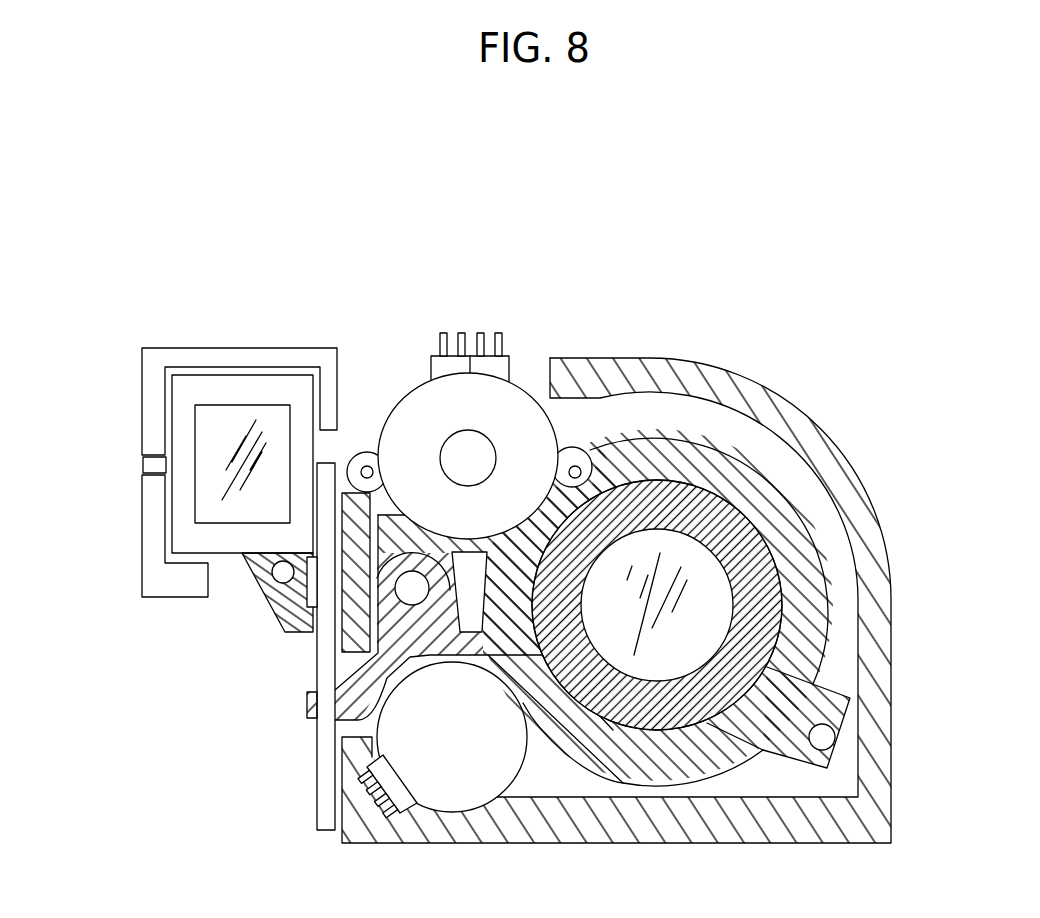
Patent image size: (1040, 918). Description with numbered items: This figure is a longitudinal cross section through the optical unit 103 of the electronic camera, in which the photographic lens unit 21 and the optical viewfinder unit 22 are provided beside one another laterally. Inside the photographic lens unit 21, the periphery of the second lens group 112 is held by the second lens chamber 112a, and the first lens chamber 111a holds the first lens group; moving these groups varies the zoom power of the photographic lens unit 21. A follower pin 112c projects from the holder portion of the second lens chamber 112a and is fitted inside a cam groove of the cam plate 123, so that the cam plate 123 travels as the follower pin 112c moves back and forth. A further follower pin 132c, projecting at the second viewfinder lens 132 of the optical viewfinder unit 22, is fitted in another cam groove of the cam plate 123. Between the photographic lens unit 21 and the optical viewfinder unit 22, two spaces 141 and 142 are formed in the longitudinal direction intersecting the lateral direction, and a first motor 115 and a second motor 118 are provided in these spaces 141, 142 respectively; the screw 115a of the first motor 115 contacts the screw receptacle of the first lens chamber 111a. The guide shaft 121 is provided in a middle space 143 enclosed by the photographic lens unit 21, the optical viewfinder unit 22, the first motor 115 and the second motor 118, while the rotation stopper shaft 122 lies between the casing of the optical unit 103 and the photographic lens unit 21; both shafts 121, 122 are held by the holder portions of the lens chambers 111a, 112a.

The photographic lens unit 21 is at (743, 427).
The optical viewfinder unit 22 is at (92, 322).
The optical unit 103 is at (830, 437).
The first lens chamber 111a is at (787, 520).
The second lens group 112 is at (660, 628).
The second lens chamber 112a is at (760, 632).
The follower pin 112c is at (310, 716).
The first motor 115 is at (474, 397).
The screw 115a is at (475, 450).
The second motor 118 is at (460, 767).
The guide shaft 121 is at (420, 580).
The rotation stopper shaft 122 is at (827, 740).
The cam plate 123 is at (320, 807).
The second viewfinder lens 132 is at (229, 437).
The follower pin 132c is at (308, 643).
The space 141 is at (393, 386).
The space 142 is at (529, 774).
The middle space 143 is at (408, 594).